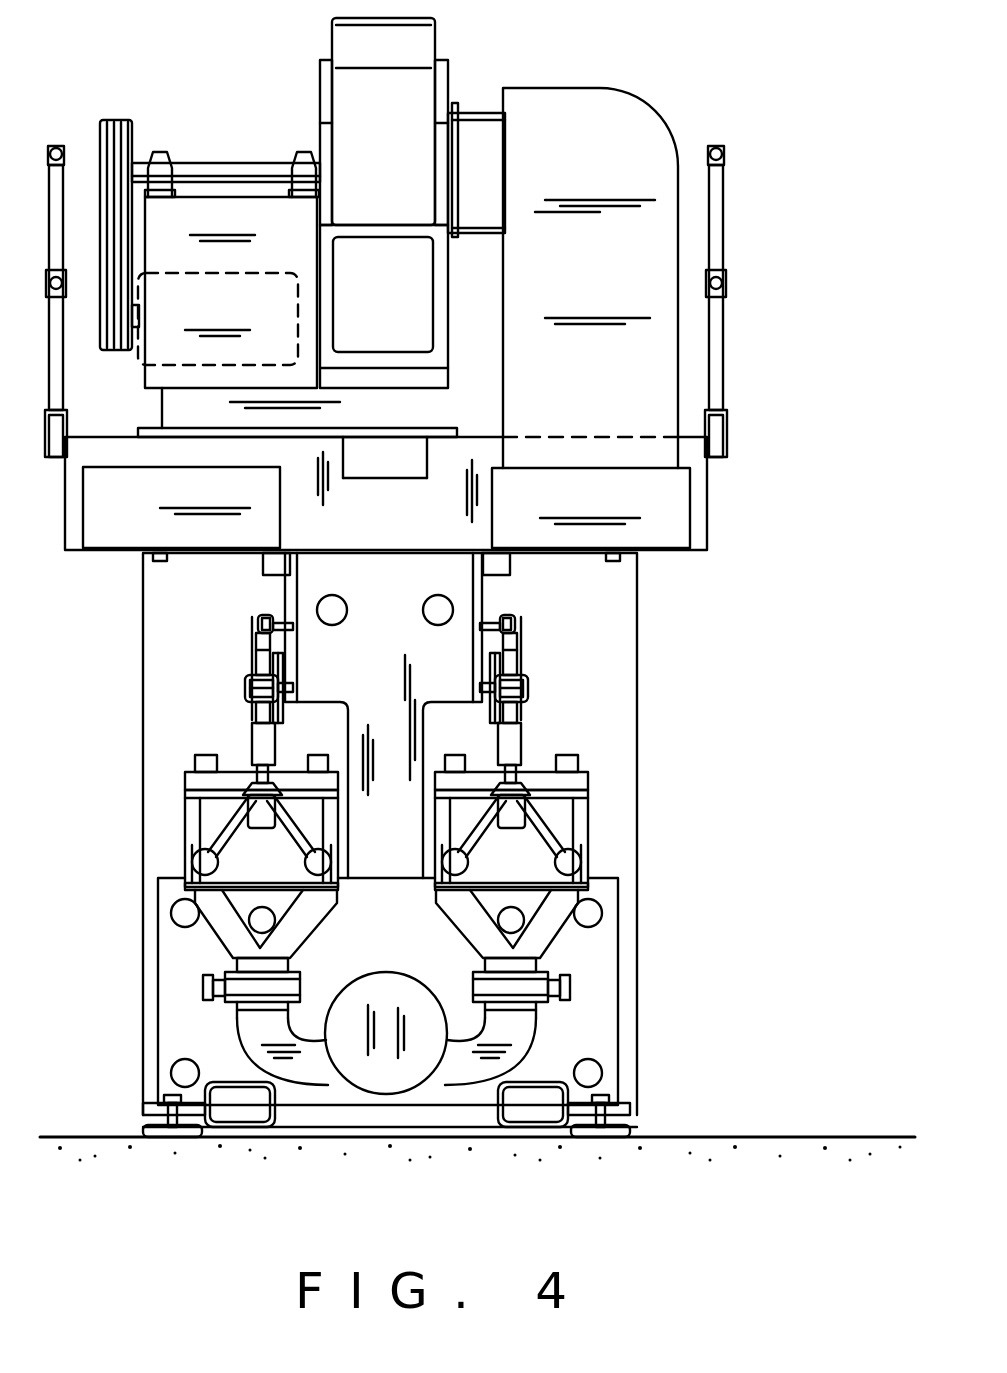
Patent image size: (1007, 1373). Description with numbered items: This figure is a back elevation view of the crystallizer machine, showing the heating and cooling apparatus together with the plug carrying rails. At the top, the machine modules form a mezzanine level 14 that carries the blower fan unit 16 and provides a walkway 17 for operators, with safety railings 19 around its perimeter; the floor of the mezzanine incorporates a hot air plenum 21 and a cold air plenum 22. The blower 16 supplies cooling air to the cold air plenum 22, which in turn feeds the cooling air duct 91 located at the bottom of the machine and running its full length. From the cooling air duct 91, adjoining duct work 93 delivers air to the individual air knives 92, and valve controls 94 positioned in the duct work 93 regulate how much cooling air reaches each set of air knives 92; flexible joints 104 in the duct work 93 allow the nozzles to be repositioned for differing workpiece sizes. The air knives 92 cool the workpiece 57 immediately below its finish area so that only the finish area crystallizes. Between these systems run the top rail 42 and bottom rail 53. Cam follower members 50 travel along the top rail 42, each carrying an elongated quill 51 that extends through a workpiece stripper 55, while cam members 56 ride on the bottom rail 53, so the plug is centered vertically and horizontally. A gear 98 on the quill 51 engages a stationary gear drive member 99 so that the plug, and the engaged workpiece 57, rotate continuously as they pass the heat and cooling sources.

The mezzanine level 14 is at (406, 524).
The blower fan unit 16 is at (417, 50).
The walkway 17 is at (476, 437).
The safety railing 19 is at (723, 315).
The hot air plenum 21 is at (122, 512).
The cold air plenum 22 is at (672, 497).
The top rail 42 is at (285, 618).
The cam follower member 50 is at (252, 640).
The quill 51 is at (252, 708).
The bottom rail 53 is at (248, 688).
The workpiece stripper 55 is at (255, 738).
The cam member 56 is at (248, 670).
The workpiece 57 is at (276, 828).
The cooling air duct 91 is at (386, 1086).
The air knife 92 is at (240, 838).
The duct work 93 is at (200, 915).
The valve control 94 is at (203, 988).
The gear 98 is at (254, 776).
The stationary gear drive member 99 is at (283, 793).
The flexible joint 104 is at (200, 862).